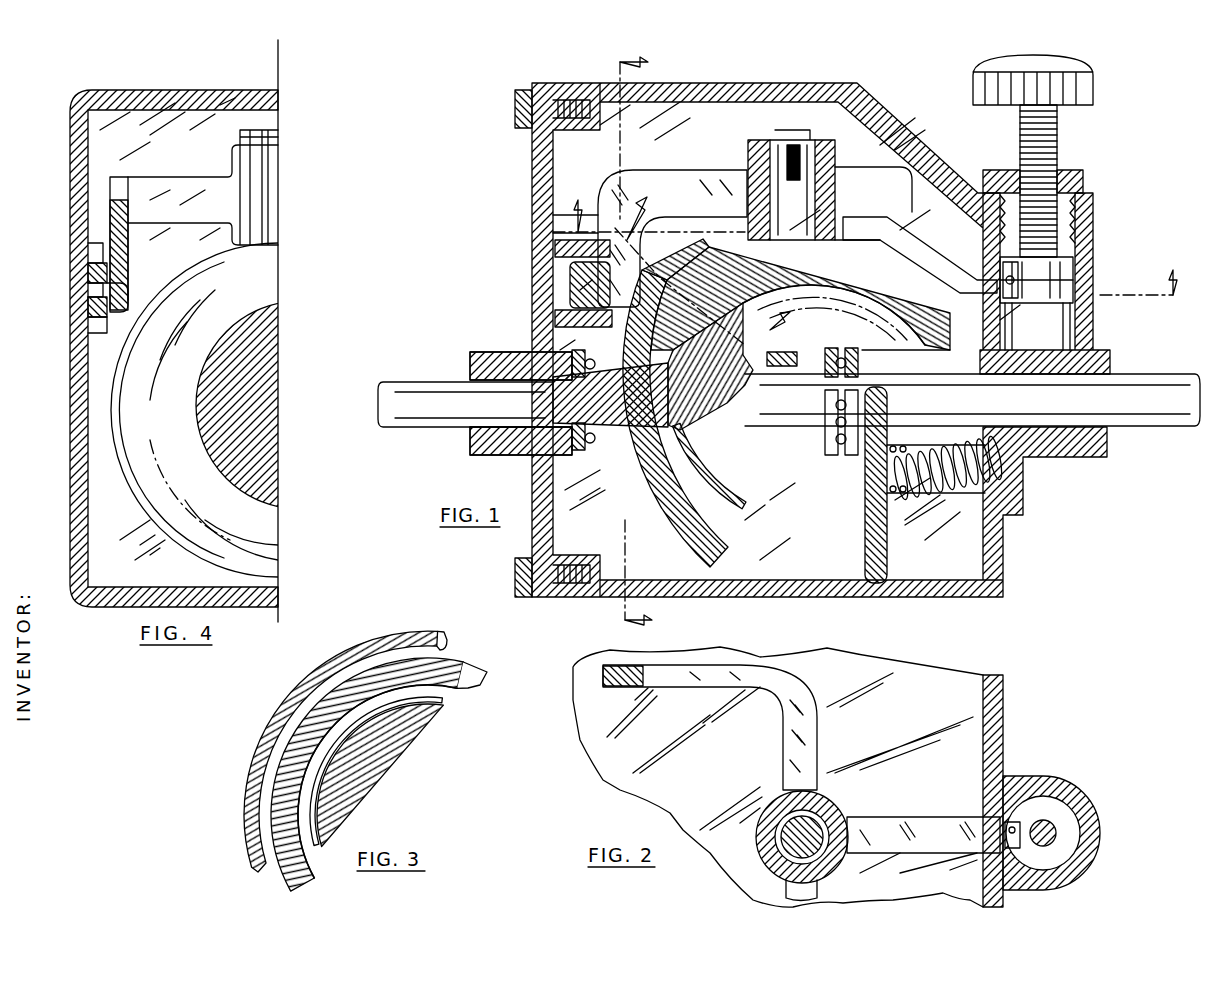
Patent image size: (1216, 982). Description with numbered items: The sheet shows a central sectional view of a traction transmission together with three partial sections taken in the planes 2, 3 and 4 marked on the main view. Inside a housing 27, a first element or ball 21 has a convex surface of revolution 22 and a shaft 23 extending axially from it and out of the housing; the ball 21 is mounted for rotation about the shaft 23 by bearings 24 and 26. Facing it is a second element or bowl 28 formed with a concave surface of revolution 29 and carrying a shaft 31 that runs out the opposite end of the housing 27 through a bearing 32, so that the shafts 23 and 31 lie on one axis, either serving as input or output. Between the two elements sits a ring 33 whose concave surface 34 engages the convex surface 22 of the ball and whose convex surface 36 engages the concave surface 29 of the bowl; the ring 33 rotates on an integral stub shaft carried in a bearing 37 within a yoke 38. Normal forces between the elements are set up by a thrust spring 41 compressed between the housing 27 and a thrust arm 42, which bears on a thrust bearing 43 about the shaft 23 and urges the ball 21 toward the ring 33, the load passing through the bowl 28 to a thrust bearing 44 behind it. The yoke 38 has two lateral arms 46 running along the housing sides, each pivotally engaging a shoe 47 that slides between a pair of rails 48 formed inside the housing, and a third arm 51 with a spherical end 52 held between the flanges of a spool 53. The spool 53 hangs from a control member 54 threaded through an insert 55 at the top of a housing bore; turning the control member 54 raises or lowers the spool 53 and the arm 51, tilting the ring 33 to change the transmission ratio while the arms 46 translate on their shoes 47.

In FIG. 3, the ball 21 is at (366, 800).
In FIG. 1, the ball 21 is at (772, 310).
In FIG. 3, the convex surface of revolution 22 is at (446, 702).
In FIG. 1, the convex surface of revolution 22 is at (720, 500).
In FIG. 1, the shaft 23 is at (1134, 372).
In FIG. 1, the bearing 24 is at (812, 352).
In FIG. 1, the bearing 26 is at (1025, 350).
In FIG. 4, the housing 27 is at (71, 414).
In FIG. 2, the housing 27 is at (1003, 718).
In FIG. 1, the housing 27 is at (1003, 573).
In FIG. 4, the bowl 28 is at (142, 498).
In FIG. 3, the bowl 28 is at (360, 652).
In FIG. 1, the bowl 28 is at (690, 556).
In FIG. 3, the concave surface of revolution 29 is at (447, 640).
In FIG. 1, the concave surface of revolution 29 is at (636, 420).
In FIG. 1, the shaft 31 is at (428, 382).
In FIG. 1, the bearing 32 is at (470, 432).
In FIG. 3, the ring 33 is at (478, 662).
In FIG. 1, the ring 33 is at (928, 350).
In FIG. 3, the concave surface of revolution 34 is at (462, 689).
In FIG. 1, the concave surface of revolution 34 is at (812, 282).
In FIG. 3, the convex surface 36 is at (455, 662).
In FIG. 1, the convex surface 36 is at (940, 312).
In FIG. 2, the bearing 37 is at (812, 812).
In FIG. 1, the bearing 37 is at (748, 163).
In FIG. 4, the yoke 38 is at (182, 178).
In FIG. 1, the yoke 38 is at (840, 168).
In FIG. 1, the thrust spring 41 is at (920, 493).
In FIG. 1, the thrust arm 42 is at (865, 495).
In FIG. 1, the thrust bearing 43 is at (834, 454).
In FIG. 1, the thrust bearing 44 is at (592, 350).
In FIG. 4, the yoke arms 46 is at (116, 178).
In FIG. 2, the yoke arms 46 is at (795, 678).
In FIG. 1, the yoke arms 46 is at (625, 172).
In FIG. 4, the shoe 47 is at (118, 318).
In FIG. 1, the shoe 47 is at (560, 280).
In FIG. 1, the rails 48 is at (558, 208).
In FIG. 2, the third arm 51 is at (952, 815).
In FIG. 1, the third arm 51 is at (940, 240).
In FIG. 2, the spherical end 52 is at (1060, 800).
In FIG. 1, the spool 53 is at (1080, 278).
In FIG. 1, the control member 54 is at (1058, 145).
In FIG. 1, the insert 55 is at (1085, 170).
In FIG. 1, the plane 2— 2 is at (865, 234).
In FIG. 1, the plane 3— 3 is at (704, 259).
In FIG. 1, the plane 4— 4 is at (644, 338).